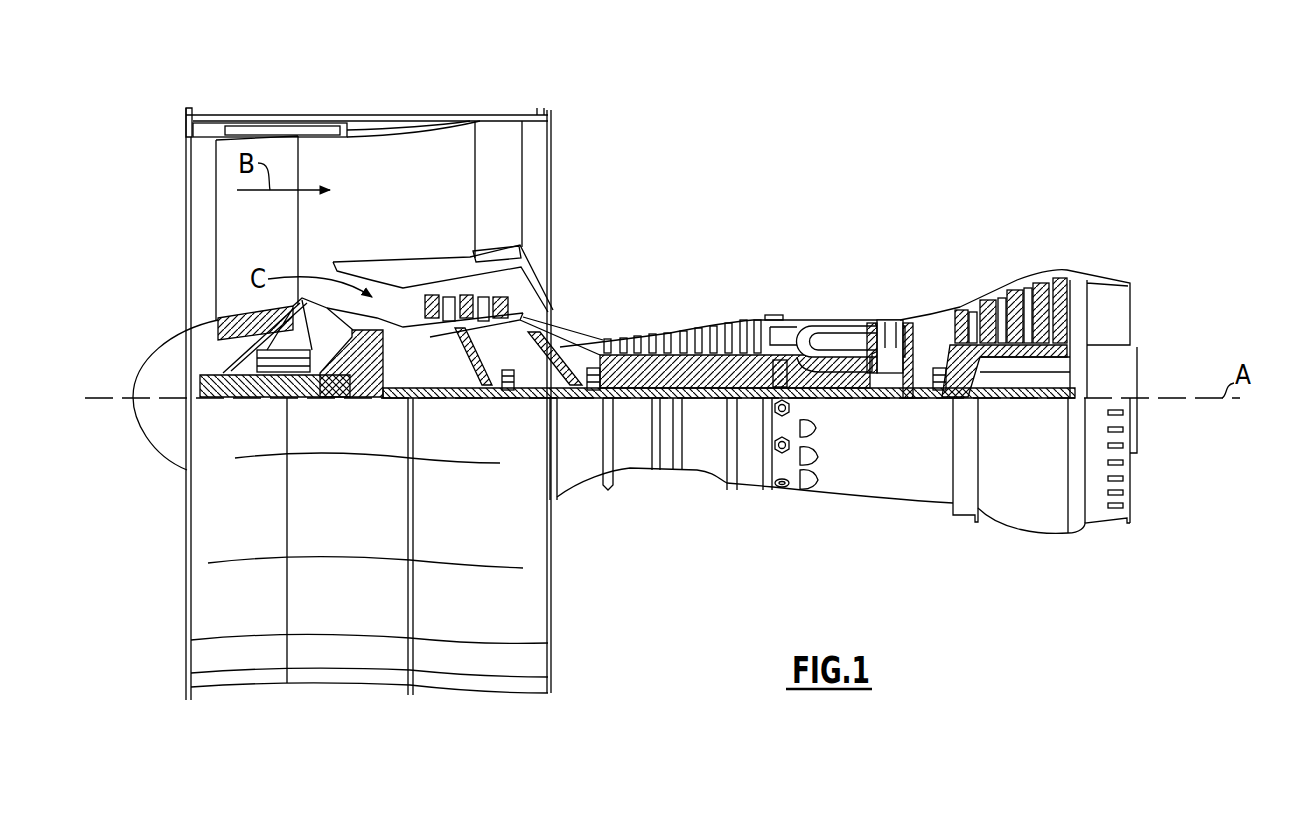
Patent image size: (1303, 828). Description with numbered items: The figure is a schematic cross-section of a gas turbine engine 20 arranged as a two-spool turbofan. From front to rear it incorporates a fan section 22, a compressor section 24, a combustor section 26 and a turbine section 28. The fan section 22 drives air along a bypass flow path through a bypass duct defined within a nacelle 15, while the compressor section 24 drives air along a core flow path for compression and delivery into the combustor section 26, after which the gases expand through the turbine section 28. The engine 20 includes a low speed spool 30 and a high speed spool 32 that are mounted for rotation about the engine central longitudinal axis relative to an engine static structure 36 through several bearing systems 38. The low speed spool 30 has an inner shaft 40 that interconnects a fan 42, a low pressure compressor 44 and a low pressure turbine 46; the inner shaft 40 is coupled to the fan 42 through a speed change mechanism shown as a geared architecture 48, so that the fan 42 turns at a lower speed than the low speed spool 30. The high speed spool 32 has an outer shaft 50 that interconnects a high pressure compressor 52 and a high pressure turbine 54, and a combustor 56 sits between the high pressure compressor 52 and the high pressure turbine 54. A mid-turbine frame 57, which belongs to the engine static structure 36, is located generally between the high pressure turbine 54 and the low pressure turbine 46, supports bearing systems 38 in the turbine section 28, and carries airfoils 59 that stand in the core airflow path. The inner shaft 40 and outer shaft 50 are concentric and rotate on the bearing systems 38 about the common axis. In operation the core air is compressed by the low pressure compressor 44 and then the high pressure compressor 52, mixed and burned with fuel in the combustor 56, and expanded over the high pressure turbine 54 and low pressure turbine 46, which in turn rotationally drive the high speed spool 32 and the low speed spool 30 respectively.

The nacelle 15 is at (370, 116).
The gas turbine engine 20 is at (832, 161).
The fan section 22 is at (297, 103).
The compressor section 24 is at (601, 302).
The combustor section 26 is at (825, 295).
The turbine section 28 is at (971, 259).
The low speed spool 30 is at (706, 407).
The high speed spool 32 is at (742, 345).
The engine static structure 36 is at (748, 490).
The bearing systems 38 is at (505, 393).
The inner shaft 40 is at (571, 410).
The fan 42 is at (273, 246).
The low pressure compressor 44 is at (472, 306).
The low pressure turbine 46 is at (1017, 285).
The geared architecture 48 is at (375, 386).
The outer shaft 50 is at (830, 392).
The high pressure compressor 52 is at (684, 355).
The high pressure turbine 54 is at (893, 320).
The combustor 56 is at (821, 344).
The mid-turbine frame 57 is at (935, 306).
The airfoils 59 is at (950, 353).